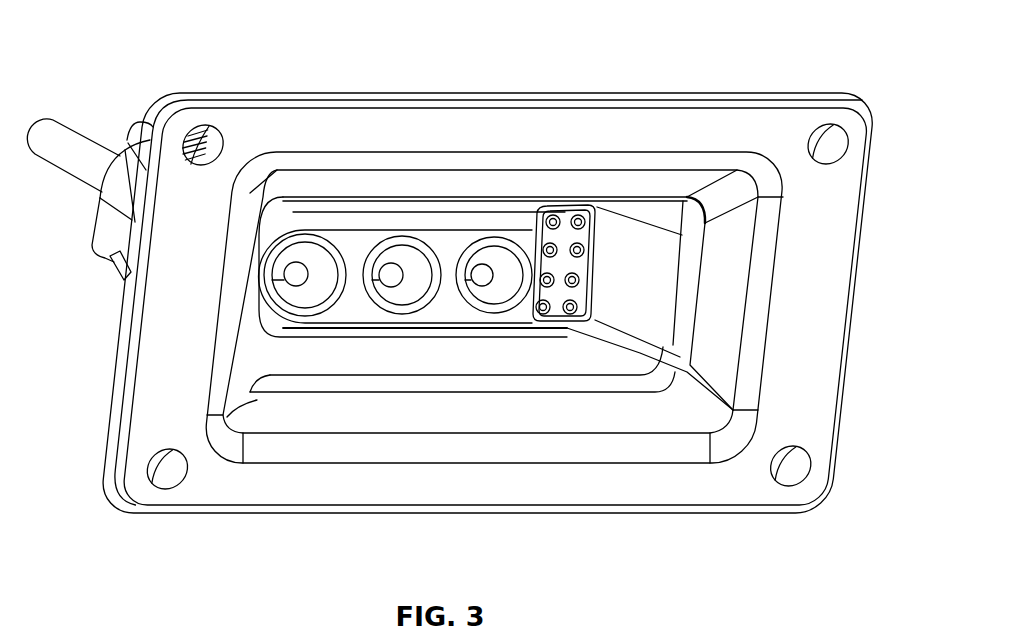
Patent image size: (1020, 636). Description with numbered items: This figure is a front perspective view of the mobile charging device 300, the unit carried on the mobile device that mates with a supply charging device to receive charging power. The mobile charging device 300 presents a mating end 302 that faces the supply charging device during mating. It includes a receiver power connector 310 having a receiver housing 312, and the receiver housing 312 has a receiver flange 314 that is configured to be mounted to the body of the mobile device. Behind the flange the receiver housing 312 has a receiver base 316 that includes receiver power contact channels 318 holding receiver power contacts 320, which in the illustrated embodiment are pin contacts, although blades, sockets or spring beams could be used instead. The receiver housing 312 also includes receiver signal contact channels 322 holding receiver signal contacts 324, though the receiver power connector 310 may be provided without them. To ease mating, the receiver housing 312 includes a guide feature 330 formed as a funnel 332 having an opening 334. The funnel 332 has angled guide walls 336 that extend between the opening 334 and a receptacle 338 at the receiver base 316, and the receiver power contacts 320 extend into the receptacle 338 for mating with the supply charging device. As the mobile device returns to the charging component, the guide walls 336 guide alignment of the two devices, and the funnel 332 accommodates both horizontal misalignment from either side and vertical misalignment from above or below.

The mobile charging device 300 is at (870, 306).
The mating end 302 is at (570, 444).
The receiver power connector 310 is at (798, 400).
The receiver housing 312 is at (165, 366).
The receiver flange 314 is at (295, 117).
The receiver base 316 is at (118, 223).
The receiver power contact channels 318 is at (302, 300).
The receiver power contacts 320 is at (300, 275).
The receiver signal contact channels 322 is at (580, 290).
The receiver signal contacts 324 is at (593, 287).
The guide feature 330 is at (688, 190).
The funnel 332 is at (716, 271).
The opening 334 is at (775, 222).
The angled guide walls 336 is at (412, 413).
The receptacle 338 is at (467, 345).